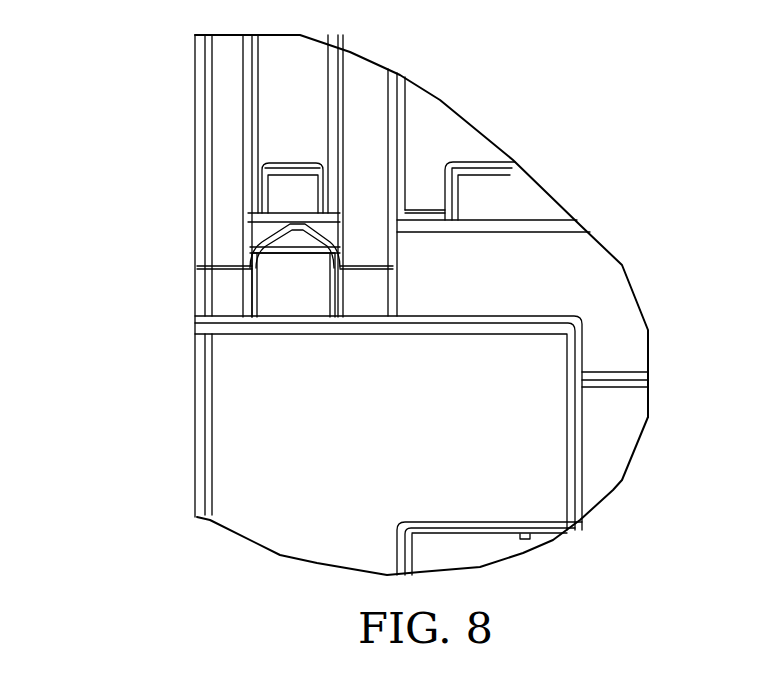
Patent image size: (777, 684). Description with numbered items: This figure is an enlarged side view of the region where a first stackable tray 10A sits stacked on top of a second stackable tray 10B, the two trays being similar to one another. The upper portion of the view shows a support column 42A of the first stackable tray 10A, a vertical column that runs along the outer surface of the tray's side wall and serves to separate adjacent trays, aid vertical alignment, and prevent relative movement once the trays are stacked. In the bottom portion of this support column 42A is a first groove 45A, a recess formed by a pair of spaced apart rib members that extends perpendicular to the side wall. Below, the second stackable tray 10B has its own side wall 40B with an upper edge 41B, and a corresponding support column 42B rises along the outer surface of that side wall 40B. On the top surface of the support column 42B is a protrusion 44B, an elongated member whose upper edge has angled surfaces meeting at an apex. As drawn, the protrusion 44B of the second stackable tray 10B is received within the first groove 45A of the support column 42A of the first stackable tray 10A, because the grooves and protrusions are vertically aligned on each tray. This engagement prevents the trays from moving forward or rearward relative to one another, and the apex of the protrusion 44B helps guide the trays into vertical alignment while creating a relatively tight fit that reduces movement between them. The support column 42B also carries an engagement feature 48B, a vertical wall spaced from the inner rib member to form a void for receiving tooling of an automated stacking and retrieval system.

The first stackable tray 10A is at (133, 111).
The support column 42A is at (295, 95).
The first groove 45A is at (262, 293).
The protrusion 44B is at (292, 298).
The second stackable tray 10B is at (133, 419).
The support column 42B is at (268, 478).
The upper edge 41B is at (543, 218).
The side wall 40B is at (613, 323).
The engagement feature 48B is at (497, 533).